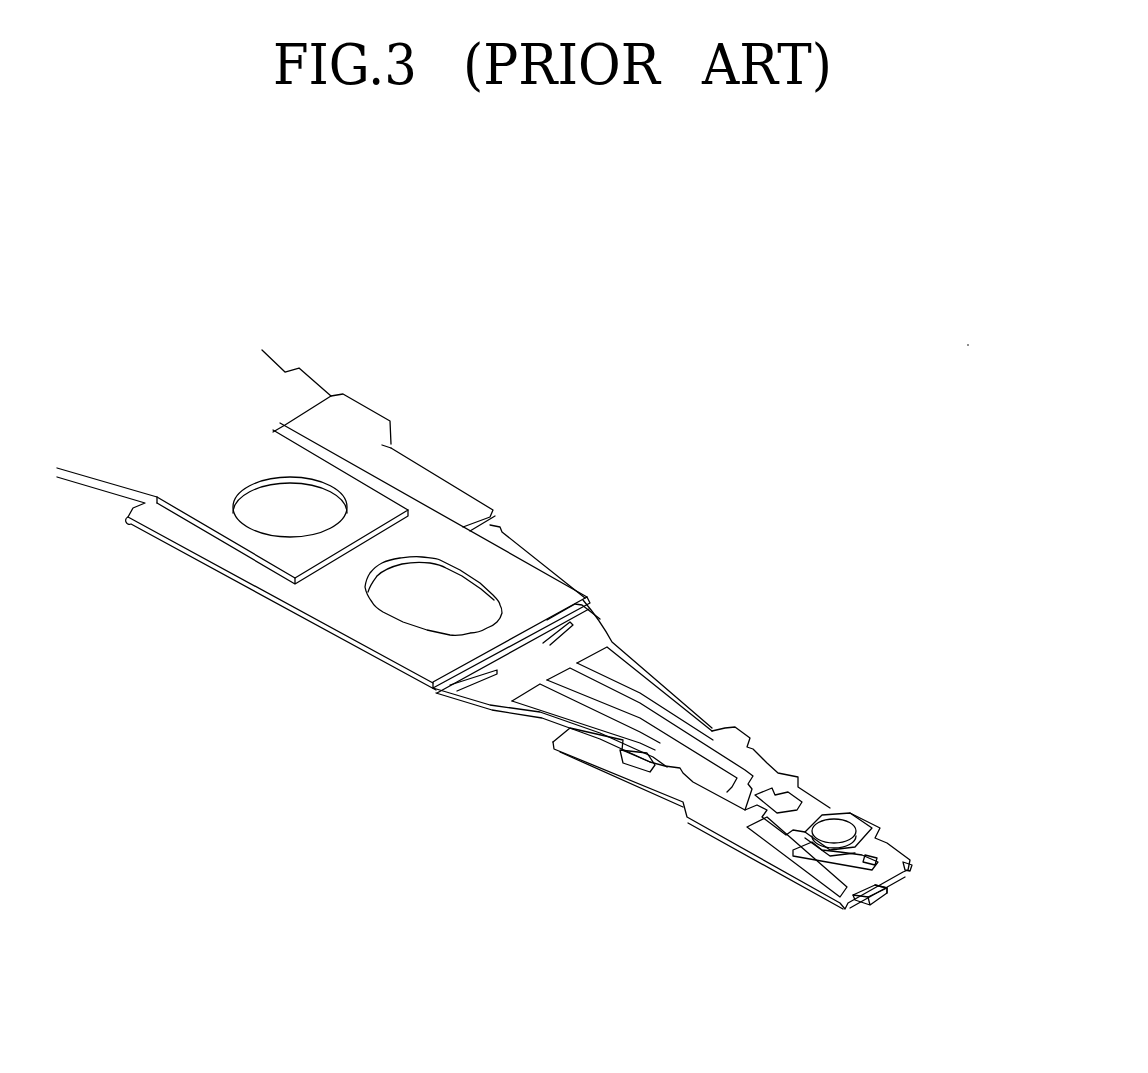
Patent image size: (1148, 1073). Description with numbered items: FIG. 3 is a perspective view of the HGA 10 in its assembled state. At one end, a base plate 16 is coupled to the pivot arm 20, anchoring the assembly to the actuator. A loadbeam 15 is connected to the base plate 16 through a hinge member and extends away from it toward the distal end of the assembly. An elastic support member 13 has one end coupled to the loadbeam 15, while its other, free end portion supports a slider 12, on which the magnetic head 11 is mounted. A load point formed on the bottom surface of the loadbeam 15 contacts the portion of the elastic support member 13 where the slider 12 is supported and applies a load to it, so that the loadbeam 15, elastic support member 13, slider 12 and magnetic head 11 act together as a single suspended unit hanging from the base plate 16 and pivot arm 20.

The HGA 10 is at (843, 622).
The magnetic head 11 is at (877, 902).
The slider 12 is at (858, 903).
The elastic support member 13 is at (717, 812).
The loadbeam 15 is at (647, 687).
The base plate 16 is at (520, 578).
The pivot arm 20 is at (229, 423).